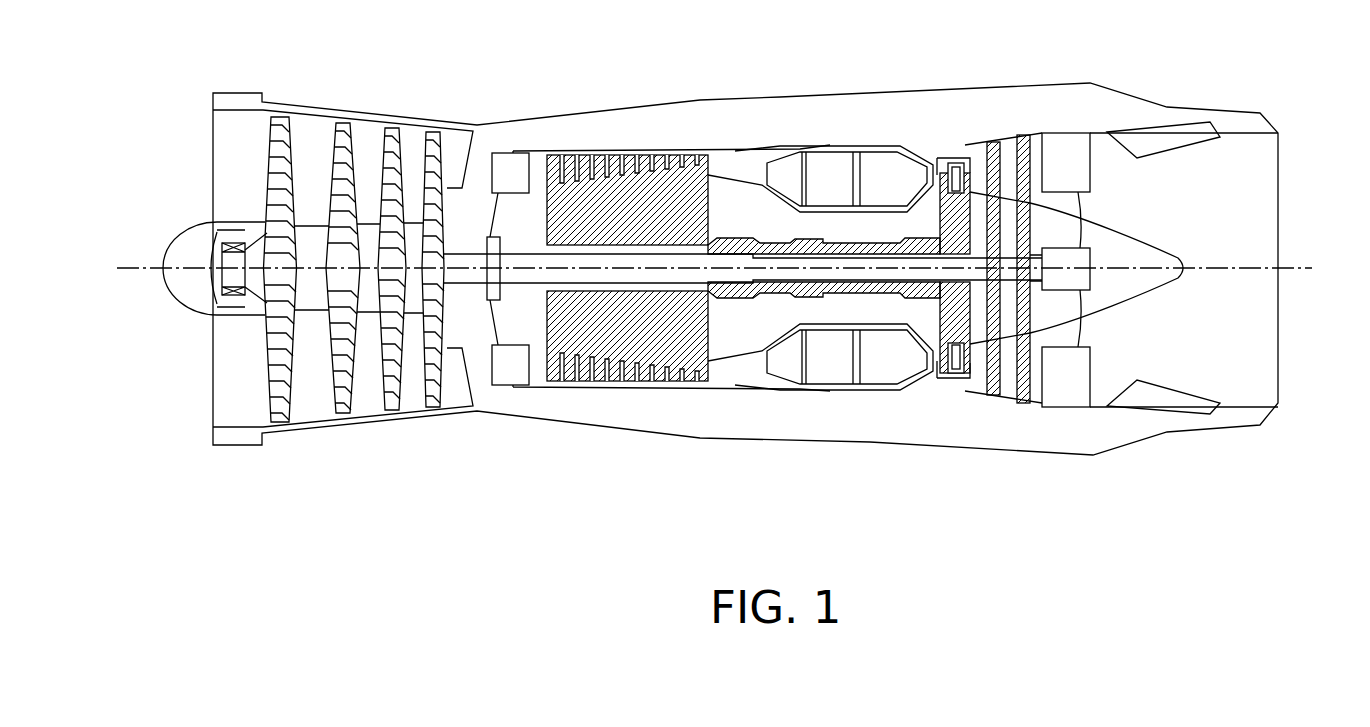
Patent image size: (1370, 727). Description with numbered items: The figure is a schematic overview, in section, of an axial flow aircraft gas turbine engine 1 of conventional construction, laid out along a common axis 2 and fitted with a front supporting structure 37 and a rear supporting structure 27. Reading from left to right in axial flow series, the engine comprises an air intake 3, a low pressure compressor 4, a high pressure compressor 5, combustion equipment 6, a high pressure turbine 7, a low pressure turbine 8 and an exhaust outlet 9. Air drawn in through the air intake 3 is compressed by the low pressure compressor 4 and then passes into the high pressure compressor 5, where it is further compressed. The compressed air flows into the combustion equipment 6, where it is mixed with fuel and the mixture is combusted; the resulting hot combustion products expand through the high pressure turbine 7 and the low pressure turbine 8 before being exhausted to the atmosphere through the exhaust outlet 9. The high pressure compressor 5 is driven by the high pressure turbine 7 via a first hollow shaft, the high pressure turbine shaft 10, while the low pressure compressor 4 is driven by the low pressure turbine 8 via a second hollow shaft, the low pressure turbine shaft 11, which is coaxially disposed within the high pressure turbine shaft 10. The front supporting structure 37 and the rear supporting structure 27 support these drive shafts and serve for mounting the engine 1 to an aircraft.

The gas turbine engine 1 is at (1146, 549).
The common axis 2 is at (133, 268).
The air intake 3 is at (237, 147).
The low pressure compressor 4 is at (367, 132).
The high pressure compressor 5 is at (612, 157).
The combustion equipment 6 is at (883, 153).
The high pressure turbine 7 is at (962, 157).
The low pressure turbine 8 is at (1023, 140).
The exhaust outlet 9 is at (1260, 167).
The high pressure turbine shaft 10 is at (723, 293).
The low pressure turbine shaft 11 is at (888, 272).
The rear supporting structure 27 is at (1068, 143).
The front supporting structure 37 is at (518, 165).